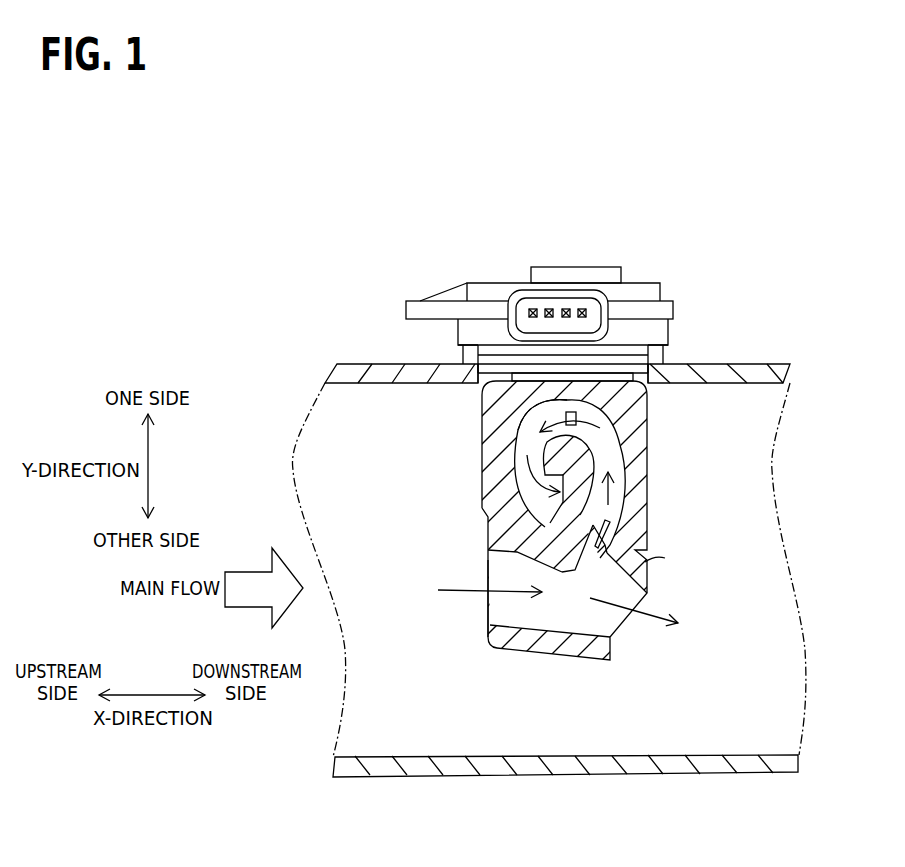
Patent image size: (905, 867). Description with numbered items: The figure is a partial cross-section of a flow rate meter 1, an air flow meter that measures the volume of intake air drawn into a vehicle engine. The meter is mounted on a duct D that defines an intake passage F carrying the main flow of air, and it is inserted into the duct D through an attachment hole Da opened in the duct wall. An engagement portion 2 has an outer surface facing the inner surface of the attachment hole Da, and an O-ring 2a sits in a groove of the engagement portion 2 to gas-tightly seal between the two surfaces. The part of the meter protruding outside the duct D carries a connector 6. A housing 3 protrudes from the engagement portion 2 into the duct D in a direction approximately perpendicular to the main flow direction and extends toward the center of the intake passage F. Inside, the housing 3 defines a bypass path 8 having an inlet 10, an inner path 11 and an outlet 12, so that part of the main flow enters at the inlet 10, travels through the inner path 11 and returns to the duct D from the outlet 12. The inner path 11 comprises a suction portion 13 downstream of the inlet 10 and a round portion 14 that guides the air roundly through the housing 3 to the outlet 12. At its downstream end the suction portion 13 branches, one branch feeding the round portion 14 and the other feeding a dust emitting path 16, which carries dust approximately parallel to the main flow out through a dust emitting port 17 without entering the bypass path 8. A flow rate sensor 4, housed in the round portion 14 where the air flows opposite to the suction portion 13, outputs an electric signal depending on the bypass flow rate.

The flow rate meter 1 is at (732, 248).
The engagement portion 2 is at (487, 370).
The O-ring 2a is at (482, 362).
The housing 3 is at (641, 497).
The flow rate sensor 4 is at (590, 437).
The connector 6 is at (483, 288).
The bypass path 8 is at (622, 512).
The inlet 10 is at (488, 612).
The inner path 11 is at (517, 474).
The outlet 12 is at (545, 527).
The suction portion 13 is at (500, 567).
The round portion 14 is at (608, 455).
The dust emitting path 16 is at (628, 572).
The dust emitting port 17 is at (612, 655).
The duct D is at (760, 370).
The attachment hole Da is at (640, 343).
The intake passage F is at (710, 718).